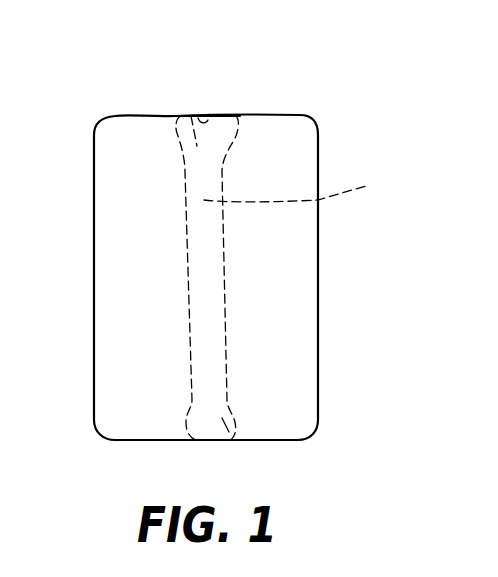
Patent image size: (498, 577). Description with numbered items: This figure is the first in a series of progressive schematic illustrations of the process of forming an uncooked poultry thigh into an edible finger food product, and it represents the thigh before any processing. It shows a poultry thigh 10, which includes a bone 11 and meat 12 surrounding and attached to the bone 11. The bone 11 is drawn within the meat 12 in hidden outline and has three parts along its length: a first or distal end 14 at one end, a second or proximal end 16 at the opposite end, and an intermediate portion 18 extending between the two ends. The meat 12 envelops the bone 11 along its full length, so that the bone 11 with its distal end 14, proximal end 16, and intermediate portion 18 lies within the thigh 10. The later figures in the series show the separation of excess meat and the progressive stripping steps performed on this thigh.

The poultry thigh 10 is at (318, 256).
The bone 11 is at (305, 187).
The meat 12 is at (292, 343).
The first or distal end 14 is at (236, 441).
The second or proximal end 16 is at (191, 116).
The intermediate portion 18 is at (183, 268).